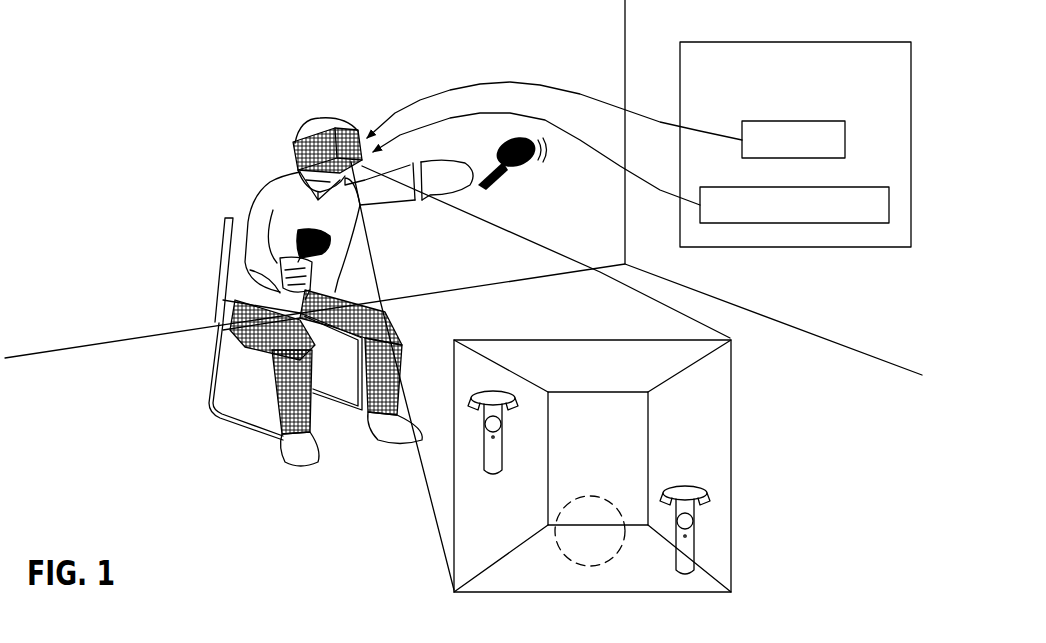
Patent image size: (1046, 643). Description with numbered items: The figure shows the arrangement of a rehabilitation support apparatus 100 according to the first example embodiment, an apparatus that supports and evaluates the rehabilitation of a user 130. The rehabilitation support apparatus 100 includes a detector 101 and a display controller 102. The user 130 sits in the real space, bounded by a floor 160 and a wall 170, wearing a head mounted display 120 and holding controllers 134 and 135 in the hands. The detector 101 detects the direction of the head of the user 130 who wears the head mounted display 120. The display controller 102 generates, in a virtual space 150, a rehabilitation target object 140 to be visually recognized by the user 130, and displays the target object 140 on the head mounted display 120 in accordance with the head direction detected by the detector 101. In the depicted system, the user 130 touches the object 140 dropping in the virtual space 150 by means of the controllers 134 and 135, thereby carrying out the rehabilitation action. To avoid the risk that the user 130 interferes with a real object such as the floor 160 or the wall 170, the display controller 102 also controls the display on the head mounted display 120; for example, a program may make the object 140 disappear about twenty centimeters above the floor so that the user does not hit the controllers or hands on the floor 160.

The rehabilitation support apparatus 100 is at (793, 40).
The detector 101 is at (845, 132).
The display controller 102 is at (866, 190).
The head mounted display 120 is at (345, 125).
The user 130 is at (262, 196).
The controller 134 is at (298, 243).
The controller 135 is at (515, 168).
The rehabilitation target object 140 is at (604, 508).
The virtual space 150 is at (733, 532).
The floor 160 is at (70, 415).
The wall 170 is at (128, 160).